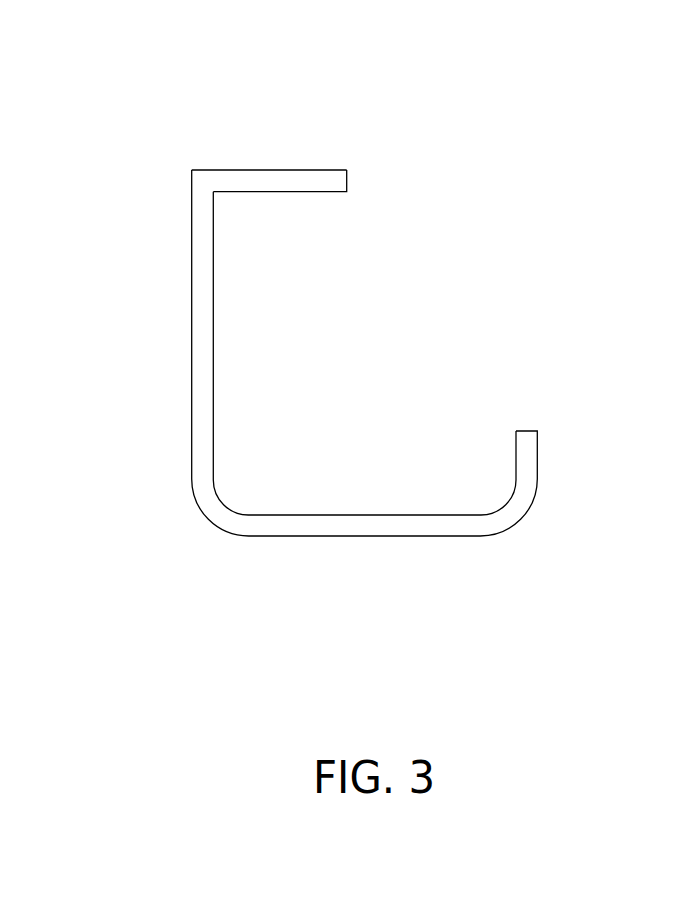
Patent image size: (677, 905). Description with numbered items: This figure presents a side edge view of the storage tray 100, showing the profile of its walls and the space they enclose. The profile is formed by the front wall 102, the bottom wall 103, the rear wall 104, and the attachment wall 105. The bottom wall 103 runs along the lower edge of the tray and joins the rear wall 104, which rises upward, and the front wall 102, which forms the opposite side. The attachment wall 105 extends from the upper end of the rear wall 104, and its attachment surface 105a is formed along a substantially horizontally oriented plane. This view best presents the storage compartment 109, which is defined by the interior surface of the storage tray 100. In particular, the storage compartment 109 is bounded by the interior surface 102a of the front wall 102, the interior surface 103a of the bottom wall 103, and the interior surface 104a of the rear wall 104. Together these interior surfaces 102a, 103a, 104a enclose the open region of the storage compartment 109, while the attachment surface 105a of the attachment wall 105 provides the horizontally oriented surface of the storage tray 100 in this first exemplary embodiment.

The storage tray 100 is at (562, 128).
The front wall 102 is at (527, 448).
The interior surface of the front wall 102a is at (502, 447).
The bottom wall 103 is at (373, 522).
The interior surface of the bottom wall 103a is at (371, 502).
The rear wall 104 is at (202, 408).
The interior surface of the rear wall 104a is at (236, 312).
The attachment wall 105 is at (262, 181).
The attachment surface 105a is at (276, 157).
The storage compartment 109 is at (308, 372).